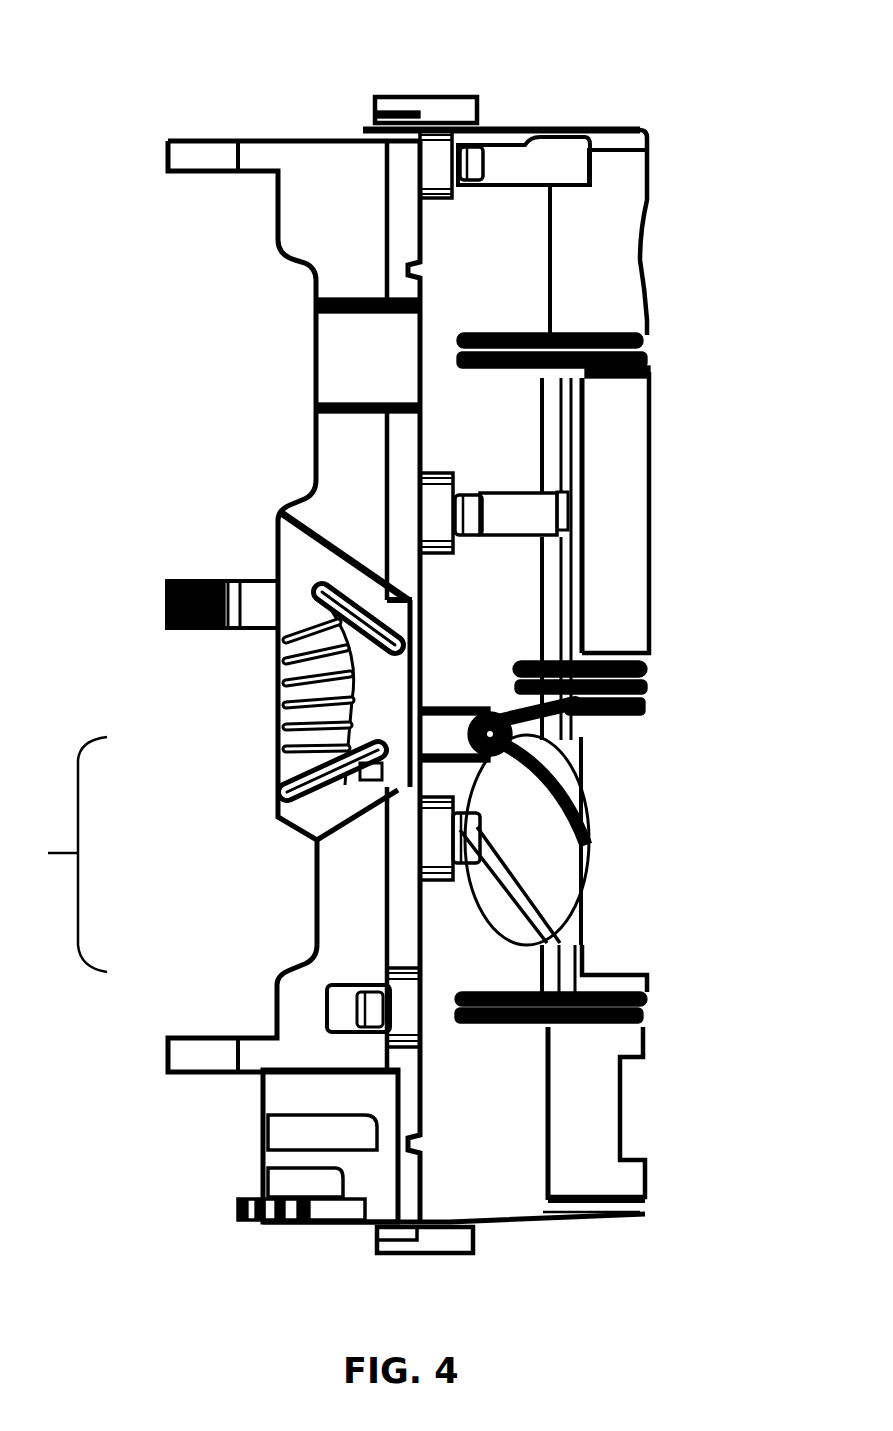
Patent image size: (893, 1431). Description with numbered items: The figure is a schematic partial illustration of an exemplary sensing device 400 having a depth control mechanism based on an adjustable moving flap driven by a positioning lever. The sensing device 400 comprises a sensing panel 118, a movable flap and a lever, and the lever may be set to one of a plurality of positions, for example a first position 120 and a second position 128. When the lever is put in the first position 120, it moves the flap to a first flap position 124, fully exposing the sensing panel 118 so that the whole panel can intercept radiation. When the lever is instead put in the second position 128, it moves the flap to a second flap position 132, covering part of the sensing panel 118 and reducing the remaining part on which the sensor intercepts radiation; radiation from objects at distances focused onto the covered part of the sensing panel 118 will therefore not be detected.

The sensing device 400 is at (349, 630).
The sensing panel 118 is at (435, 857).
The lever position 120 is at (270, 817).
The flap position 124 is at (647, 707).
The lever position 128 is at (318, 585).
The flap position 132 is at (590, 843).